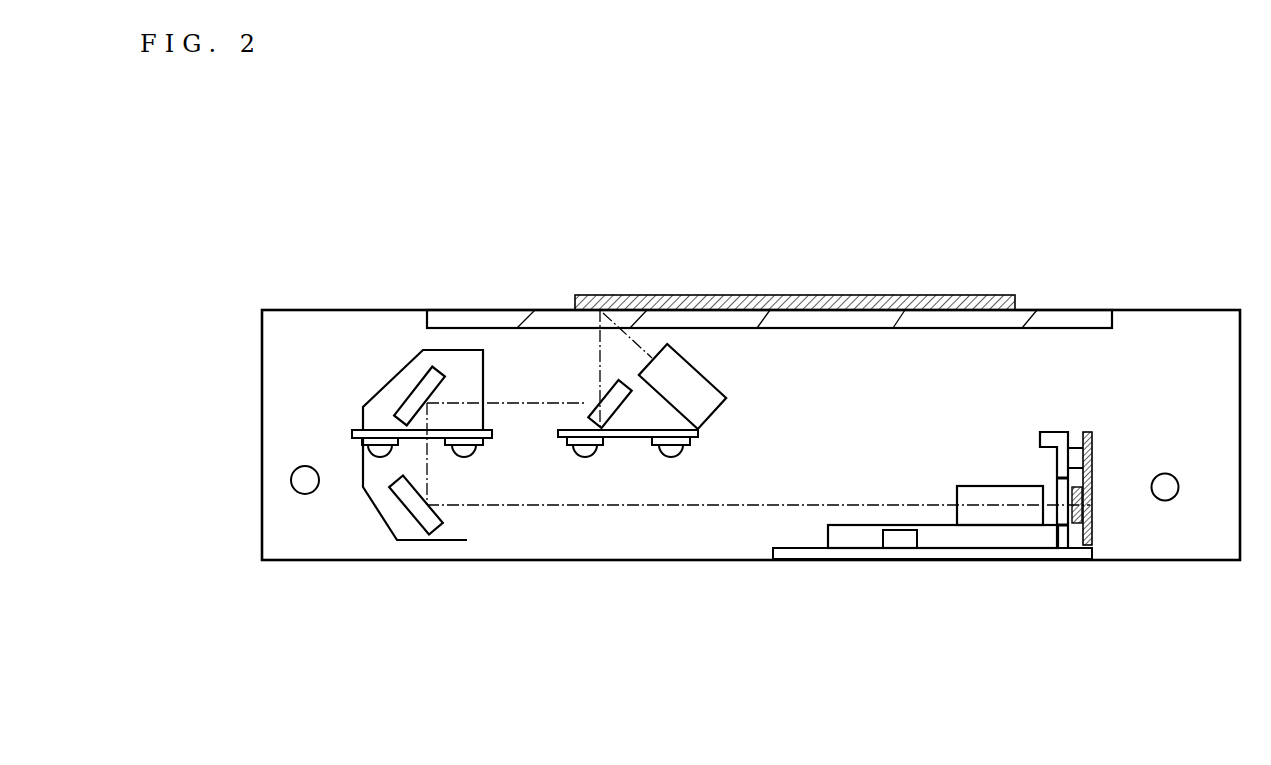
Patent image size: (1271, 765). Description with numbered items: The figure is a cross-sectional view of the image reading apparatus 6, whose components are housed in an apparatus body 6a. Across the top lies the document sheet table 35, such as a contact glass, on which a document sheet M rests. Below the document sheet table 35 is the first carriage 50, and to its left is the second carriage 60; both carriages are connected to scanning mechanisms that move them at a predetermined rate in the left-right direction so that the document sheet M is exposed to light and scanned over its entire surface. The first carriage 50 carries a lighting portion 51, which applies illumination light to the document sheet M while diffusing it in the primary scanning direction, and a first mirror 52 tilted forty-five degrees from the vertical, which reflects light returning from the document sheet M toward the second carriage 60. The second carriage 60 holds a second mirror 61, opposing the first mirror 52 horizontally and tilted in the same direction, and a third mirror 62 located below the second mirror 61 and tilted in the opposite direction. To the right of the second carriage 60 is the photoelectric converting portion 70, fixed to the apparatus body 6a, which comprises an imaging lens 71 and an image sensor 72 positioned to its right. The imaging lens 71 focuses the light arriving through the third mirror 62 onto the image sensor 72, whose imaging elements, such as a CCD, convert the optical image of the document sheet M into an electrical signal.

The image reading apparatus 6 is at (256, 266).
The apparatus body 6a is at (261, 418).
The document sheet table 35 is at (558, 324).
The document sheet M is at (895, 294).
The first carriage 50 is at (698, 366).
The lighting portion 51 is at (729, 394).
The first mirror 52 is at (622, 410).
The second carriage 60 is at (397, 356).
The second mirror 61 is at (402, 403).
The third mirror 62 is at (407, 490).
The photoelectric converting portion 70 is at (864, 565).
The imaging lens 71 is at (960, 489).
The image sensor 72 is at (1078, 527).